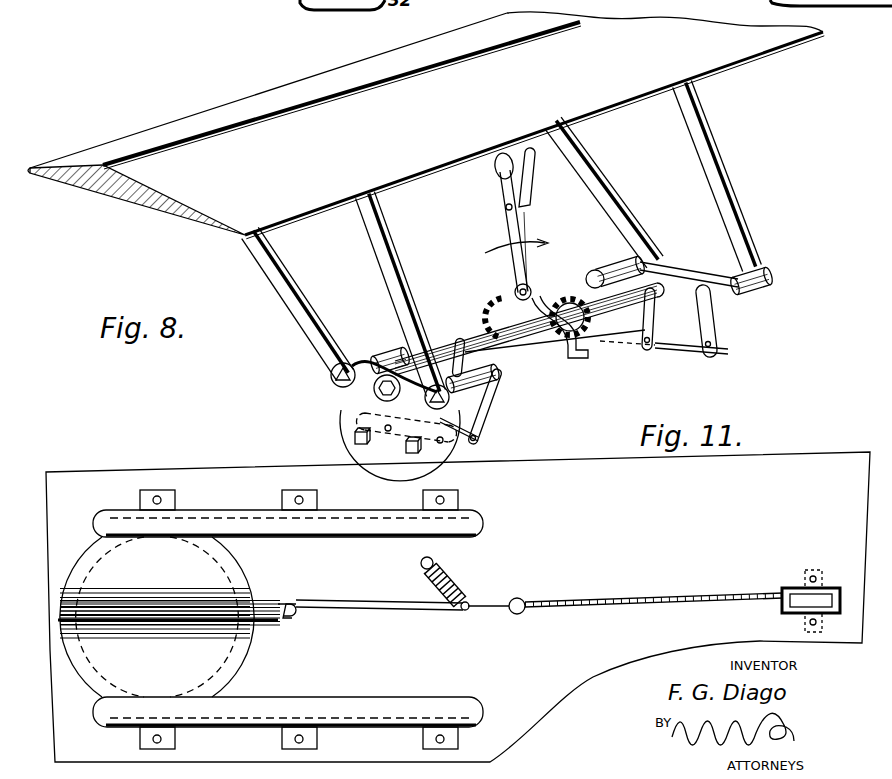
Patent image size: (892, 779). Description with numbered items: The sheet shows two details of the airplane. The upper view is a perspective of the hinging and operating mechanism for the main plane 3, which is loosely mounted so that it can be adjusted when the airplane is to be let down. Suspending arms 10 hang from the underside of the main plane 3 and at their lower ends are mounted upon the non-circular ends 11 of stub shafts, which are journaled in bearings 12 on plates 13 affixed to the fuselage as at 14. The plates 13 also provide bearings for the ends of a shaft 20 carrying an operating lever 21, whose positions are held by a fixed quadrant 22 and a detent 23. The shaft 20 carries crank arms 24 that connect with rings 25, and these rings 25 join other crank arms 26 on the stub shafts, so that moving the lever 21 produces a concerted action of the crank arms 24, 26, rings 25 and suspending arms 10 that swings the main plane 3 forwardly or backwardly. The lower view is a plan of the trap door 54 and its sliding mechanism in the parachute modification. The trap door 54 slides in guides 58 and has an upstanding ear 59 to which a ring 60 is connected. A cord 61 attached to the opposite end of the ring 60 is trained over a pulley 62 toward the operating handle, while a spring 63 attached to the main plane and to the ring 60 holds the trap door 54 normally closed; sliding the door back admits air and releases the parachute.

In FIG. 8, the main plane 3 is at (152, 204).
In FIG. 11, the main plane 3 is at (458, 607).
In FIG. 8, the suspending arms 10 is at (385, 256).
In FIG. 8, the non-circular ends 11 is at (331, 374).
In FIG. 8, the bearings 12 is at (388, 352).
In FIG. 8, the plates 13 is at (345, 403).
In FIG. 8, the fuselage fastening 14 is at (354, 440).
In FIG. 8, the shaft 20 is at (503, 358).
In FIG. 8, the operating lever 21 is at (512, 235).
In FIG. 8, the fixed quadrant 22 is at (565, 305).
In FIG. 8, the detent 23 is at (538, 290).
In FIG. 8, the crank arms 24 is at (460, 343).
In FIG. 8, the rings 25 is at (690, 356).
In FIG. 8, the crank arms 26 is at (740, 322).
In FIG. 11, the trap door 54 is at (168, 617).
In FIG. 11, the guides 58 is at (352, 522).
In FIG. 11, the upstanding ear 59 is at (292, 598).
In FIG. 11, the ring 60 is at (352, 598).
In FIG. 11, the cord 61 is at (630, 590).
In FIG. 11, the pulleys 62 is at (786, 592).
In FIG. 11, the spring 63 is at (456, 580).